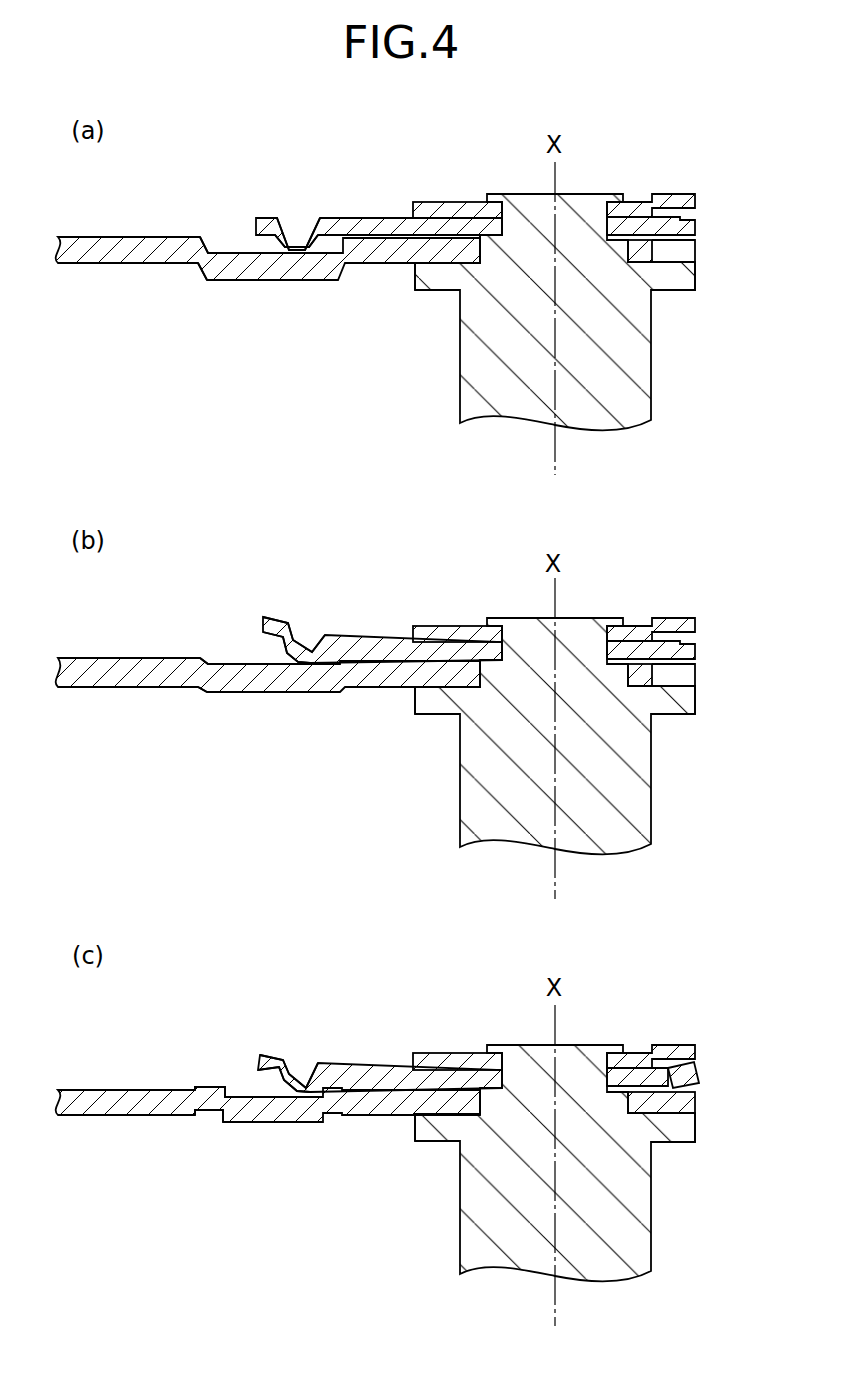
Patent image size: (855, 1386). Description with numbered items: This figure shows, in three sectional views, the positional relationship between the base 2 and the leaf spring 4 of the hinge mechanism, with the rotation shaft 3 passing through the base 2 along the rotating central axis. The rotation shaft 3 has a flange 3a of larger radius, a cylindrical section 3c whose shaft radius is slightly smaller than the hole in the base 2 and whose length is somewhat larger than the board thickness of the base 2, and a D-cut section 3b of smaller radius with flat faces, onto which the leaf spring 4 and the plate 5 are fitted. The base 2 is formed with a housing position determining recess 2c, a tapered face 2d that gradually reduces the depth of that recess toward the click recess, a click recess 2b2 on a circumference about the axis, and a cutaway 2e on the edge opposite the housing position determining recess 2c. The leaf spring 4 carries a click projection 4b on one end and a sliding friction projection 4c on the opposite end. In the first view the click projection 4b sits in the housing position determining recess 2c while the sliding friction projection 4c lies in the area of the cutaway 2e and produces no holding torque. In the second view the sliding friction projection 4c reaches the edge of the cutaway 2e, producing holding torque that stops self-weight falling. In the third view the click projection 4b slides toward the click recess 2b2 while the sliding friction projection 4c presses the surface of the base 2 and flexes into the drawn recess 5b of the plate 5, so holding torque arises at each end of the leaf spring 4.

The base 2 is at (123, 236).
The housing position determining recess 2c is at (230, 252).
The tapered face 2d is at (230, 663).
The click recess 2b2 is at (230, 1096).
The cutaway 2e is at (673, 252).
The rotation shaft 3 is at (460, 380).
The flange 3a is at (680, 285).
The D-cut section 3b is at (515, 193).
The cylindrical section 3c is at (490, 250).
The leaf spring 4 is at (365, 217).
The click projection 4b is at (304, 233).
The sliding friction projection 4c is at (690, 232).
The plate 5 is at (450, 201).
The drawn recess 5b is at (686, 193).